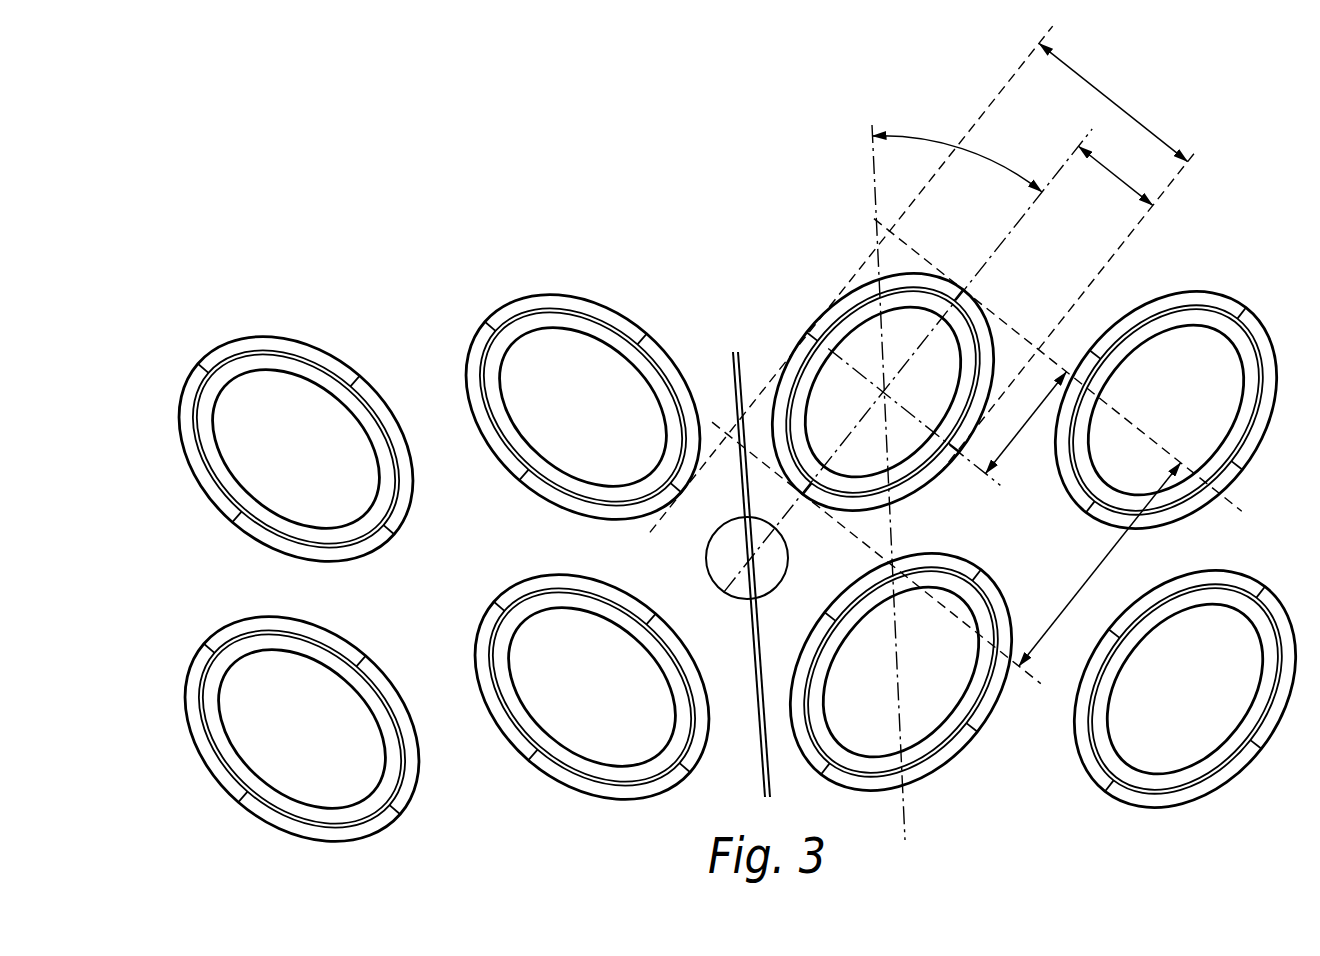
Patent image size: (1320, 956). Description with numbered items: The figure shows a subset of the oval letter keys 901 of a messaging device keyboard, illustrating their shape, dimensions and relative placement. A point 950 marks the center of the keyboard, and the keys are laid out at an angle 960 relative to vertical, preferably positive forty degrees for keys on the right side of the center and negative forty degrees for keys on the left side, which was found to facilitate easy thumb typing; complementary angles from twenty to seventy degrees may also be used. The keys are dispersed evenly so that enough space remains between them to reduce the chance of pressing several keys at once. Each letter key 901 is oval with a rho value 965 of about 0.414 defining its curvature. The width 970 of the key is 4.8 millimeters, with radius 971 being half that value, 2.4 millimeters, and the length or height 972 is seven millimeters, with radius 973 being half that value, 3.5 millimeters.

The letter key 901 is at (848, 290).
The center point of keyboard 950 is at (712, 533).
The angle 960 is at (984, 153).
The rho value 965 is at (904, 274).
The width of the key 970 is at (1117, 105).
The radius of half the key width 971 is at (1113, 178).
The length of the key 972 is at (1080, 588).
The radius of half the key length 973 is at (1022, 428).